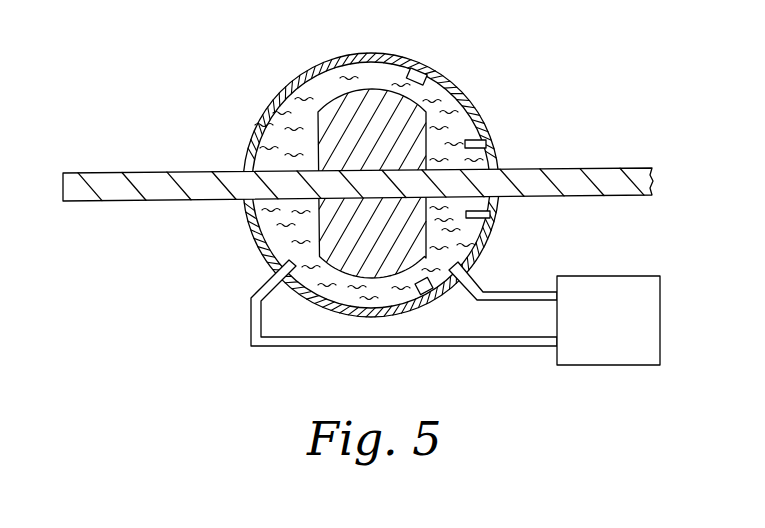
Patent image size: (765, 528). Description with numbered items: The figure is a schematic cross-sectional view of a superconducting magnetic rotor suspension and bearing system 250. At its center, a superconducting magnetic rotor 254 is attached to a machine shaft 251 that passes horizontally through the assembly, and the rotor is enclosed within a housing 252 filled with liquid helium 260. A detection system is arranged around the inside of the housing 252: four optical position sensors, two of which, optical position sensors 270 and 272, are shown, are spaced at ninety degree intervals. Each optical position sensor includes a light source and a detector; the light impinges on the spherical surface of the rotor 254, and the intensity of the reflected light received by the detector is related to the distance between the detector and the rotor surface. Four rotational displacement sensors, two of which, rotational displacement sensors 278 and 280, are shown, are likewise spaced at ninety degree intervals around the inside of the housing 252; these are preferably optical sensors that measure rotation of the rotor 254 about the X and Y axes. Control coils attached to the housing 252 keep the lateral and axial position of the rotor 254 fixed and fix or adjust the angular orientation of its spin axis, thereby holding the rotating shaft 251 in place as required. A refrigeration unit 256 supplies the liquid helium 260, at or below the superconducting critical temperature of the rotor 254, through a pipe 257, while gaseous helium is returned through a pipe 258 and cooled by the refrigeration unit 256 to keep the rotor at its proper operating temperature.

The rotary seal assembly 250 is at (237, 83).
The machine shaft 251 is at (605, 168).
The housing 252 is at (481, 122).
The superconducting magnetic rotor 254 is at (390, 137).
The refrigeration unit 256 is at (627, 333).
The pipe 257 is at (477, 280).
The pipe 258 is at (372, 347).
The liquid helium 260 is at (270, 240).
The optical position sensor 270 is at (421, 66).
The optical position sensor 272 is at (427, 300).
The rotational displacement sensor 278 is at (486, 144).
The rotational displacement sensor 280 is at (489, 216).